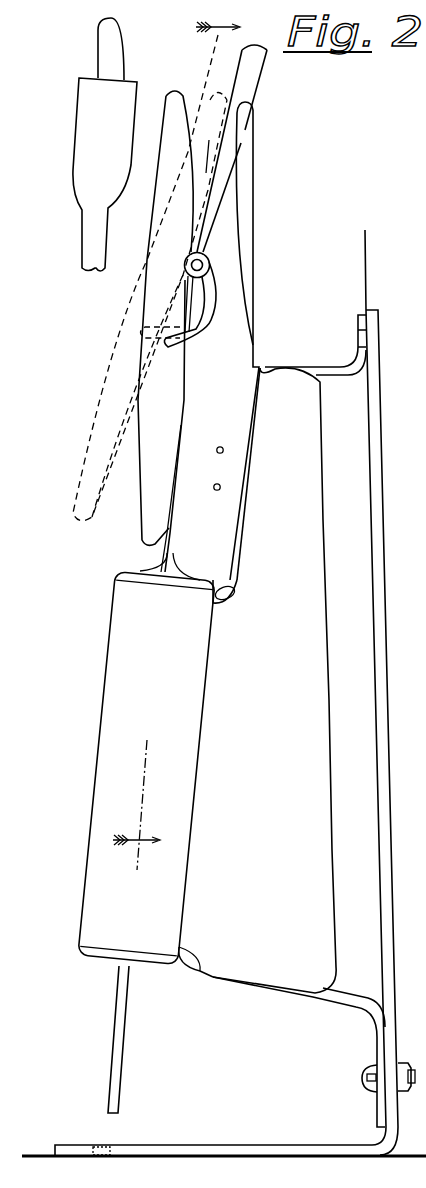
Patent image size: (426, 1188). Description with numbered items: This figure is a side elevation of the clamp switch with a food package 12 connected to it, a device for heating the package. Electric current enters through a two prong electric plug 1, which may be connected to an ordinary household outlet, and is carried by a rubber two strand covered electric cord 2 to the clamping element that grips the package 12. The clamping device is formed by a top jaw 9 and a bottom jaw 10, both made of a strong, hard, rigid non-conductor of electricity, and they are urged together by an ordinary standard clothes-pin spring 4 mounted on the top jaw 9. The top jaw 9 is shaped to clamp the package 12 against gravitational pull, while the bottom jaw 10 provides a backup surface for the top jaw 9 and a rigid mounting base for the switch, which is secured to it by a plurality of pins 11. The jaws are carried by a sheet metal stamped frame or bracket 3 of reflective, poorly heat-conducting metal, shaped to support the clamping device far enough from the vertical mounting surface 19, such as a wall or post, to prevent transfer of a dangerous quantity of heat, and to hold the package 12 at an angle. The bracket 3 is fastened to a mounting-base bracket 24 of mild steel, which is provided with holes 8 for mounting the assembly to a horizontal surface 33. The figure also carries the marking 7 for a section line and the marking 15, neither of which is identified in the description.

The two prong electric plug 1 is at (80, 108).
The electric cord 2 is at (262, 84).
The frame or bracket 3 is at (358, 317).
The clothes-pin spring 4 is at (210, 268).
The section line / screw 7 is at (358, 1076).
The holes 8 is at (103, 1145).
The top jaw 9 is at (77, 492).
The bottom jaw 10 is at (244, 181).
The pins 11 is at (216, 450).
The food package 12 is at (115, 644).
The frame 15 is at (413, 239).
The vertical mounting surface 19 is at (364, 262).
The mounting-base bracket 24 is at (210, 1143).
The horizontal surface 33 is at (42, 1155).